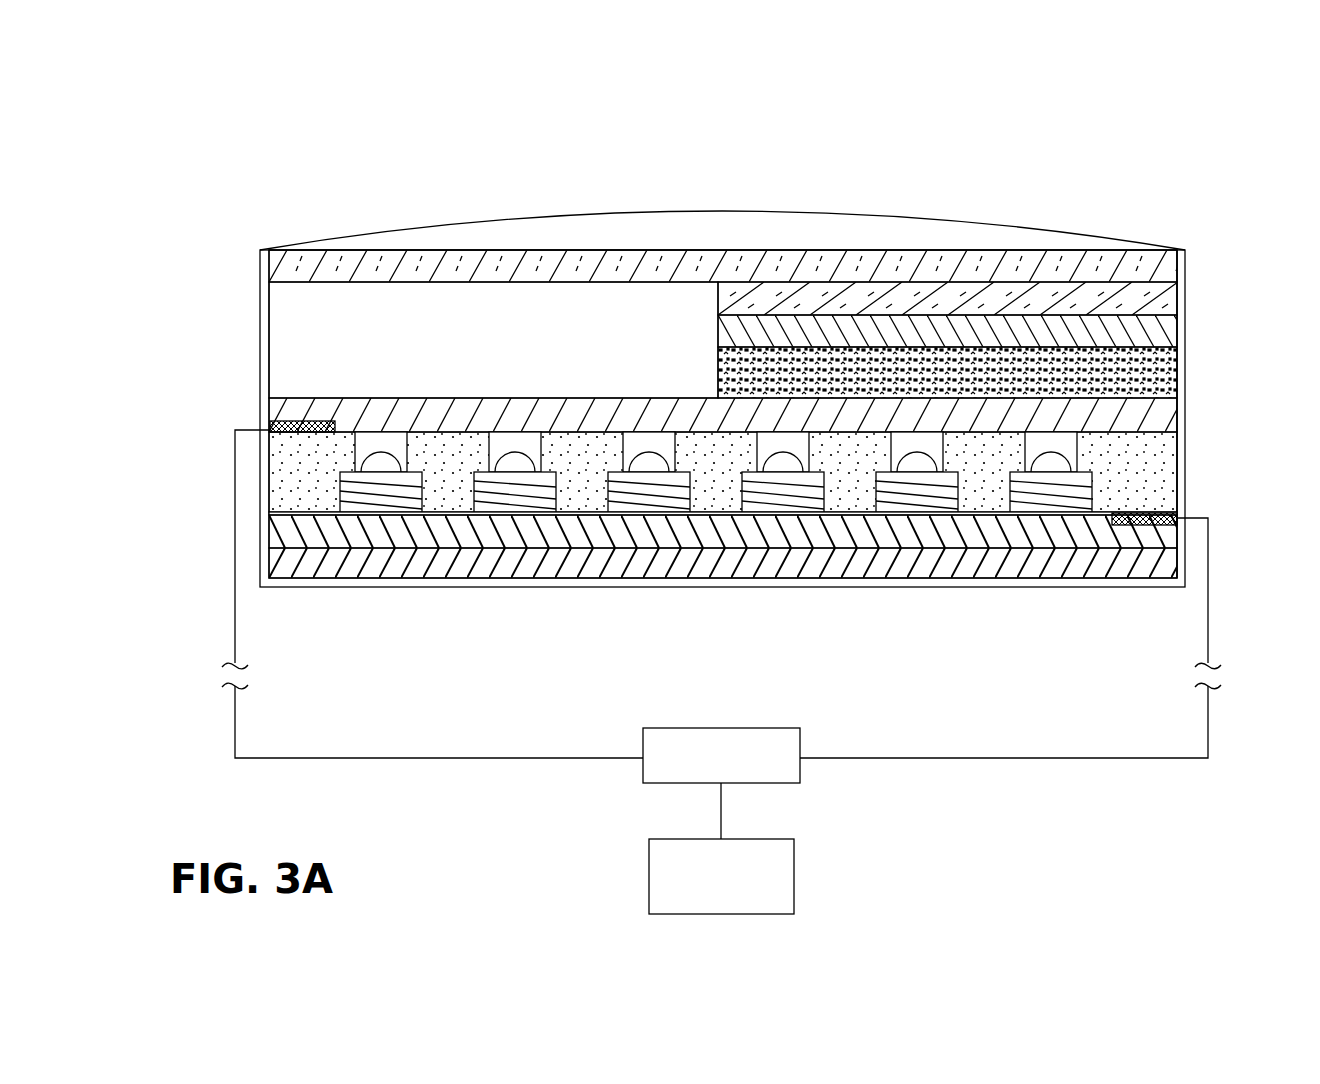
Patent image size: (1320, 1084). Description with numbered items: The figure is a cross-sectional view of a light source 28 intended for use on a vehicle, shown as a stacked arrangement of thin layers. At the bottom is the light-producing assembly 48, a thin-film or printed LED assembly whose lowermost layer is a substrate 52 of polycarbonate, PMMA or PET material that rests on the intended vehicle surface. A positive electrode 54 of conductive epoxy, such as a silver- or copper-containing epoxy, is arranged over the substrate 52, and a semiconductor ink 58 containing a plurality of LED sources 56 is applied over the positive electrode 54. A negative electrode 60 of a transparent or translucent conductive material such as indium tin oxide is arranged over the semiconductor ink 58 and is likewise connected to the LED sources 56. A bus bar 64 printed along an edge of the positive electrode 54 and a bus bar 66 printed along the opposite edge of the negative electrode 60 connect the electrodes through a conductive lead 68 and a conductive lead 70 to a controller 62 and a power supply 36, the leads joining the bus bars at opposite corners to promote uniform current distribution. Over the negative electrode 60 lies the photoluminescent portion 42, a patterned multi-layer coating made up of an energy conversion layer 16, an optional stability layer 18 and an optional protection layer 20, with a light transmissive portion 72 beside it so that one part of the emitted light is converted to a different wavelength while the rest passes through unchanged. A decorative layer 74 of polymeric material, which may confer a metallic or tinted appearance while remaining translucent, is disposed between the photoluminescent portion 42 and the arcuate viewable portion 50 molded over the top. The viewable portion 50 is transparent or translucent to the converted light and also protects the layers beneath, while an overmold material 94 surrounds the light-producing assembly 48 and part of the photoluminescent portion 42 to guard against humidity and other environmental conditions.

The light source 28 is at (1064, 142).
The viewable portion 50 is at (1052, 230).
The overmold material 94 is at (1186, 250).
The decorative layer 74 is at (1185, 265).
The light transmissive portions 72 is at (476, 327).
The photoluminescent portion 42 is at (727, 330).
The protection layer 20 is at (1170, 298).
The stability layer 18 is at (1130, 332).
The energy conversion layer 16 is at (1125, 367).
The light-producing assembly 48 is at (698, 531).
The negative electrode 60 is at (1185, 412).
The bus bar 66 is at (270, 427).
The semiconductor ink 58 is at (1185, 470).
The LED sources 56 is at (395, 497).
The bus bar 64 is at (1185, 507).
The positive electrode 54 is at (1185, 533).
The substrate 52 is at (1185, 560).
The conductive lead 70 is at (235, 629).
The conductive lead 68 is at (1208, 630).
The controller 62 is at (800, 773).
The power supply 36 is at (794, 856).